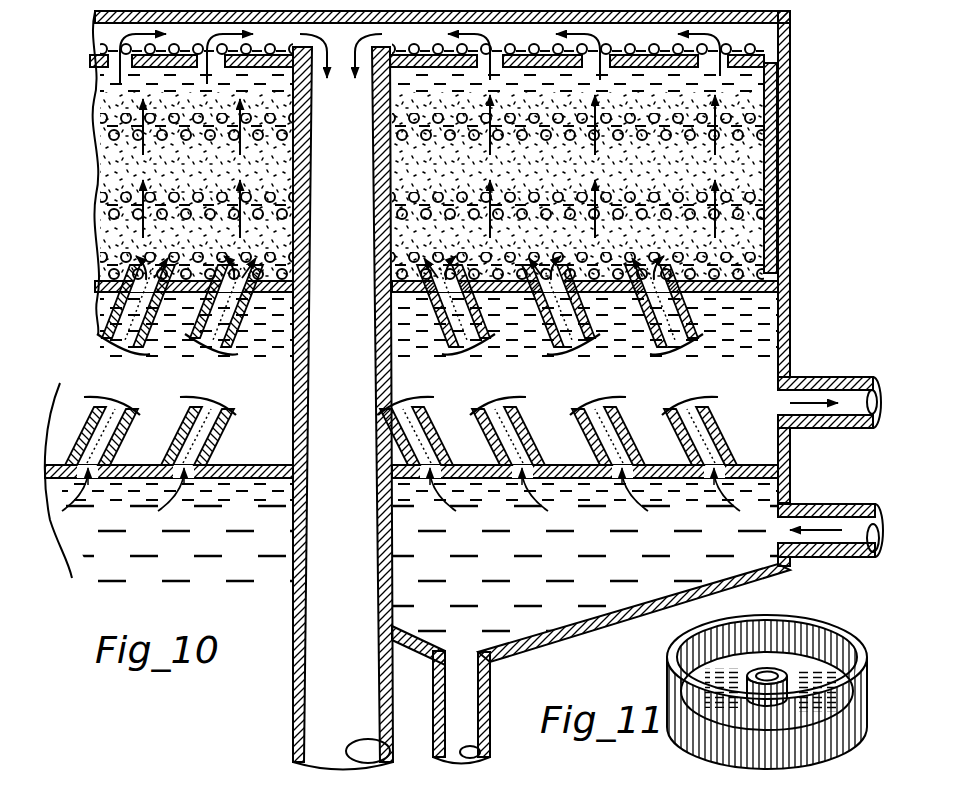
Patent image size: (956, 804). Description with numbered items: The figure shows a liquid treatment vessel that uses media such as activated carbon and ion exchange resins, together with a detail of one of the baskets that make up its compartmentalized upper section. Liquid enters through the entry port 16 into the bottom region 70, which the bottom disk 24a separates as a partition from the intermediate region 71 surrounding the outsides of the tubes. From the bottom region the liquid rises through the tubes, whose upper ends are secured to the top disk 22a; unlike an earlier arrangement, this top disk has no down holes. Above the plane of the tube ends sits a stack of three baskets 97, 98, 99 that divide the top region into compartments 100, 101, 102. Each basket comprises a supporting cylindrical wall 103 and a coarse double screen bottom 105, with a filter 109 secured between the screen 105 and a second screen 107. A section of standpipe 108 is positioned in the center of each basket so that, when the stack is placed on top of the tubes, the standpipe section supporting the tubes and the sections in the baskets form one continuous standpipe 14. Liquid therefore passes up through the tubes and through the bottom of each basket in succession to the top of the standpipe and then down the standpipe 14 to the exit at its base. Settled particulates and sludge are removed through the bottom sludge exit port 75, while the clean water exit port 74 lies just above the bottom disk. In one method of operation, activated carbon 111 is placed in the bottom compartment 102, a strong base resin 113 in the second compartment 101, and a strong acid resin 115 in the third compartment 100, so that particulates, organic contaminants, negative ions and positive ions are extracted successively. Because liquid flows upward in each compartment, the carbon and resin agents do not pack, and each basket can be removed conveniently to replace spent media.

In FIG. 10, the standpipe 14 is at (360, 569).
In FIG. 10, the entry port 16 is at (800, 518).
In FIG. 10, the top disk 22a is at (752, 300).
In FIG. 10, the bottom disk 24a is at (762, 466).
In FIG. 10, the bottom region 70 is at (625, 566).
In FIG. 10, the intermediate region 71 is at (576, 400).
In FIG. 10, the exit port 74 is at (800, 380).
In FIG. 10, the bottom sludge exit port 75 is at (475, 694).
In FIG. 10, the basket 97 is at (770, 218).
In FIG. 10, the basket 98 is at (750, 148).
In FIG. 10, the basket 99 is at (765, 107).
In FIG. 10, the compartment 100 is at (760, 84).
In FIG. 10, the compartment 101 is at (766, 137).
In FIG. 10, the compartment 102 is at (750, 238).
In FIG. 10, the supporting cylindrical wall 103 is at (770, 192).
In FIG. 11, the supporting cylindrical wall 103 is at (815, 645).
In FIG. 10, the coarse double screen bottom 105 is at (100, 256).
In FIG. 11, the coarse double screen bottom 105 is at (805, 718).
In FIG. 10, the screen 107 is at (97, 290).
In FIG. 10, the section of standpipe 108 is at (338, 117).
In FIG. 11, the section of standpipe 108 is at (772, 668).
In FIG. 10, the filter 109 is at (97, 266).
In FIG. 10, the activated carbon 111 is at (100, 228).
In FIG. 10, the strong base resin 113 is at (105, 176).
In FIG. 10, the strong acid resin 115 is at (100, 104).